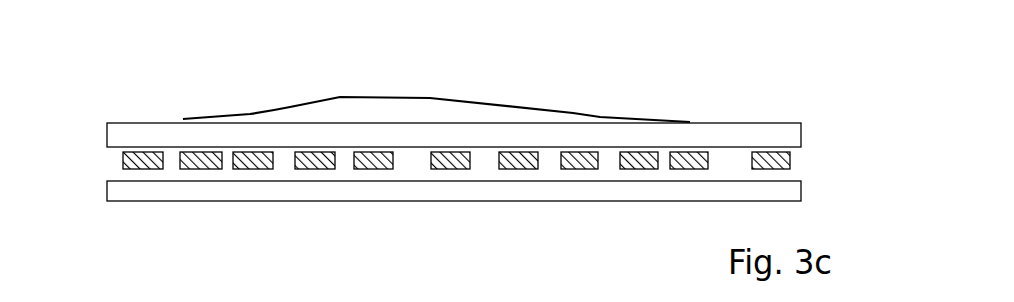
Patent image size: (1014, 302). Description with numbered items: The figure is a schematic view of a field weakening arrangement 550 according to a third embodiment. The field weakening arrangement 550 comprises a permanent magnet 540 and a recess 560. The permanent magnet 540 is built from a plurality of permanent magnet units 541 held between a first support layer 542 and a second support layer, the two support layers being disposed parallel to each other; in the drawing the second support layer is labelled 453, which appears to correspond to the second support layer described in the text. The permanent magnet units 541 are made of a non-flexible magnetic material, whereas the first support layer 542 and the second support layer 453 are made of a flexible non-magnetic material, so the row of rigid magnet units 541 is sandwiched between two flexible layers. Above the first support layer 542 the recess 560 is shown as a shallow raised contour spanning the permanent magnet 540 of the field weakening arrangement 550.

The permanent magnet 540 is at (124, 228).
The first support layer 542 is at (147, 123).
The bottom substrate layer 453 is at (155, 201).
The permanent magnet units 541 is at (262, 169).
The recess 560 is at (447, 110).
The field weakening arrangement 550 is at (727, 110).